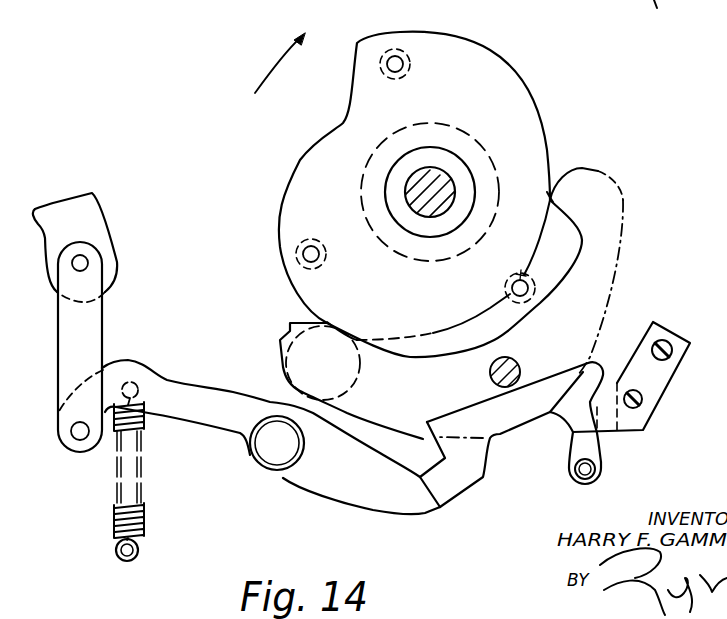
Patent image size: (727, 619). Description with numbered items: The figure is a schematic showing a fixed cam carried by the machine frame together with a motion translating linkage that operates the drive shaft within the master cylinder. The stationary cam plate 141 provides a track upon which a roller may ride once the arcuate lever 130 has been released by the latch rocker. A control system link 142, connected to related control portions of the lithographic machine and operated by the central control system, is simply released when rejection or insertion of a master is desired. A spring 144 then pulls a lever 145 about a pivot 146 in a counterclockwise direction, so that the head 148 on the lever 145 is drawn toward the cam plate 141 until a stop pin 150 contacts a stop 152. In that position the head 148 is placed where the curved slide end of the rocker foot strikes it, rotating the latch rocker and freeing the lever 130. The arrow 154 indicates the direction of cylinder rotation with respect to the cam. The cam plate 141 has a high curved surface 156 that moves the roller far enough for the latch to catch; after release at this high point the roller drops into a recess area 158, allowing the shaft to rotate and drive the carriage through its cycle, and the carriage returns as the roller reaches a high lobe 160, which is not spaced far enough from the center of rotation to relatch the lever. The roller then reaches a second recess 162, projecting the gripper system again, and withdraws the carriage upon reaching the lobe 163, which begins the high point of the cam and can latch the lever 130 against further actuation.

The arcuate lever 130 is at (607, 237).
The stationary cam plate 141 is at (430, 213).
The control system link 142 is at (92, 337).
The spring 144 is at (140, 513).
The lever 145 is at (193, 392).
The pivot 146 is at (277, 457).
The head 148 is at (497, 423).
The stop pin 150 is at (595, 468).
The stop 152 is at (648, 418).
The arrow 154 is at (280, 63).
The high curved surface 156 is at (293, 291).
The recess area 158 is at (345, 120).
The high lobe 160 is at (388, 36).
The second recess 162 is at (550, 170).
The lobe 163 is at (553, 193).